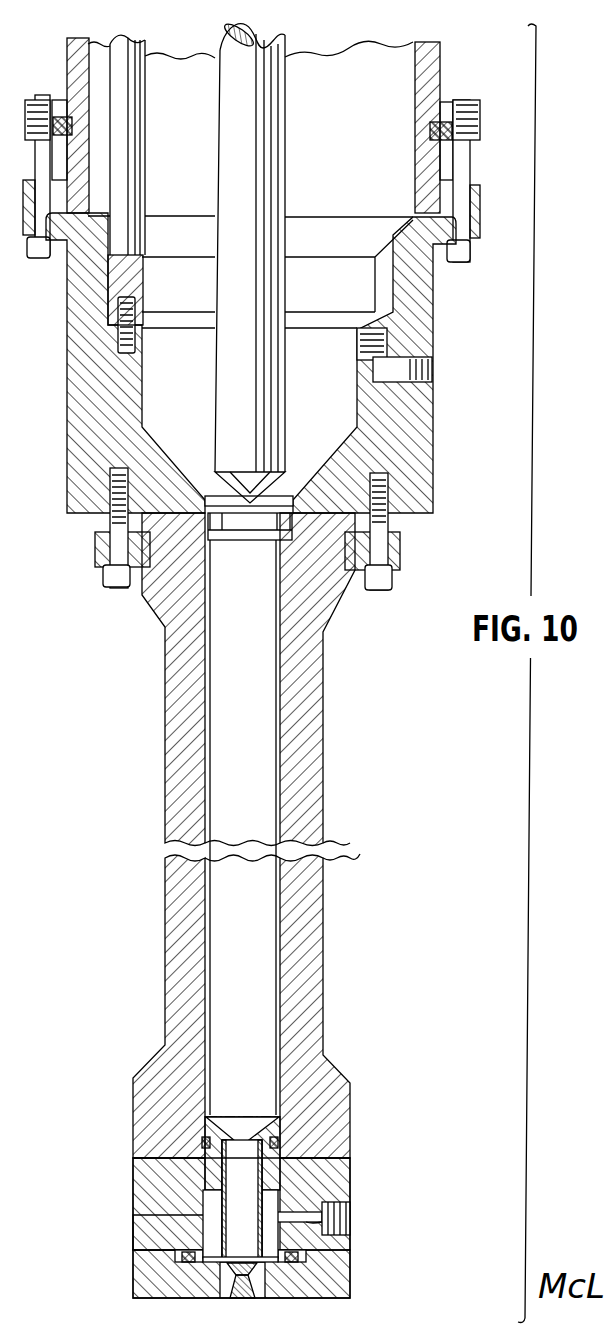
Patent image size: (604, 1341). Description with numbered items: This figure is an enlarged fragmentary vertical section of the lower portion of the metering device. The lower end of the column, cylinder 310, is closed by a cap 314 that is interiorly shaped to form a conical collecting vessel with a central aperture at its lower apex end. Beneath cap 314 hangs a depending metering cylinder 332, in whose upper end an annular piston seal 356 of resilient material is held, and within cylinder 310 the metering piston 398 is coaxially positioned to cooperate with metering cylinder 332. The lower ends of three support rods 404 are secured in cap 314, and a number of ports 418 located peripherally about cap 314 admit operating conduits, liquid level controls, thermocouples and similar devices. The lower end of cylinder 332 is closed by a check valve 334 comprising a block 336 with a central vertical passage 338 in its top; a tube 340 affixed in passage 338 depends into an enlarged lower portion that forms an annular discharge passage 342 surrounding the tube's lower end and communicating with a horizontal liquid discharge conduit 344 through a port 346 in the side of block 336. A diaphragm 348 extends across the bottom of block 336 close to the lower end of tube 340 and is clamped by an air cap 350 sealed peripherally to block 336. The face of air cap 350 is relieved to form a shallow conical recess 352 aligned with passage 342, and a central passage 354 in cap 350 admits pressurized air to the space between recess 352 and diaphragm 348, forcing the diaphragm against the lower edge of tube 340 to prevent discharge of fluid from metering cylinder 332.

The cylinder 310 is at (434, 84).
The cap 314 is at (418, 410).
The metering cylinder 332 is at (344, 844).
The check valve 334 is at (110, 1124).
The block 336 is at (283, 1178).
The central vertical passage 338 is at (265, 1174).
The tube 340 is at (207, 1210).
The annular discharge passage 342 is at (222, 1222).
The horizontal liquid discharge conduit 344 is at (323, 1243).
The port 346 is at (345, 1203).
The diaphragm 348 is at (218, 1268).
The air cap 350 is at (137, 1256).
The shallow conical recess 352 is at (233, 1264).
The central passage 354 is at (248, 1292).
The annular piston seal 356 is at (212, 518).
The metering piston 398 is at (288, 134).
The support rods 404 is at (131, 167).
The ports 418 is at (433, 383).